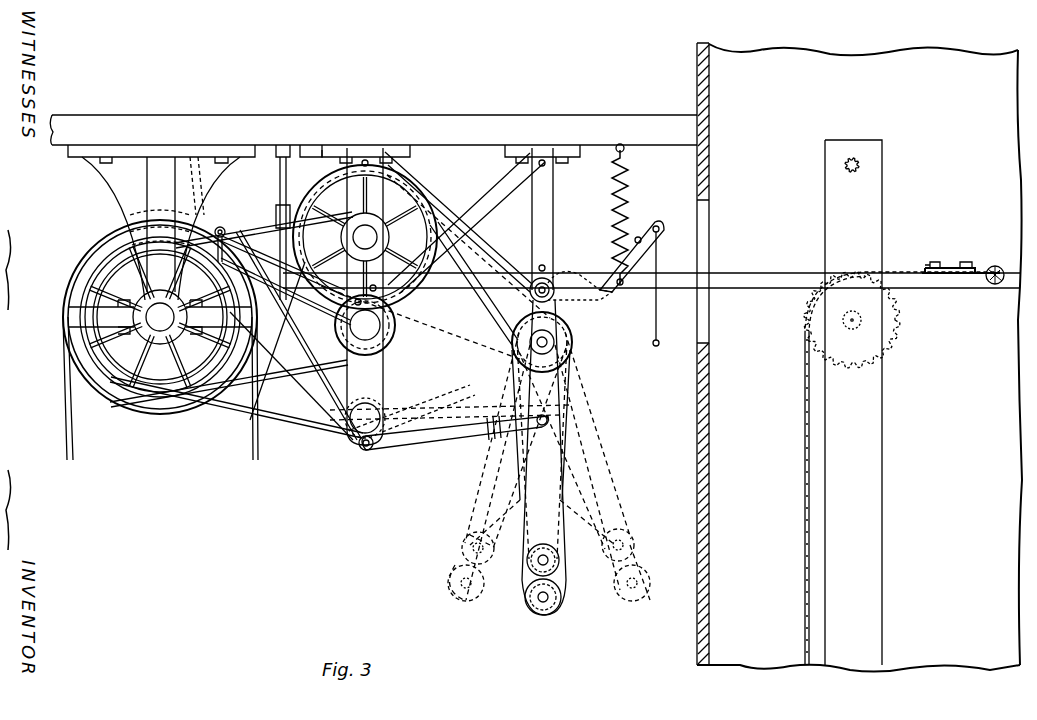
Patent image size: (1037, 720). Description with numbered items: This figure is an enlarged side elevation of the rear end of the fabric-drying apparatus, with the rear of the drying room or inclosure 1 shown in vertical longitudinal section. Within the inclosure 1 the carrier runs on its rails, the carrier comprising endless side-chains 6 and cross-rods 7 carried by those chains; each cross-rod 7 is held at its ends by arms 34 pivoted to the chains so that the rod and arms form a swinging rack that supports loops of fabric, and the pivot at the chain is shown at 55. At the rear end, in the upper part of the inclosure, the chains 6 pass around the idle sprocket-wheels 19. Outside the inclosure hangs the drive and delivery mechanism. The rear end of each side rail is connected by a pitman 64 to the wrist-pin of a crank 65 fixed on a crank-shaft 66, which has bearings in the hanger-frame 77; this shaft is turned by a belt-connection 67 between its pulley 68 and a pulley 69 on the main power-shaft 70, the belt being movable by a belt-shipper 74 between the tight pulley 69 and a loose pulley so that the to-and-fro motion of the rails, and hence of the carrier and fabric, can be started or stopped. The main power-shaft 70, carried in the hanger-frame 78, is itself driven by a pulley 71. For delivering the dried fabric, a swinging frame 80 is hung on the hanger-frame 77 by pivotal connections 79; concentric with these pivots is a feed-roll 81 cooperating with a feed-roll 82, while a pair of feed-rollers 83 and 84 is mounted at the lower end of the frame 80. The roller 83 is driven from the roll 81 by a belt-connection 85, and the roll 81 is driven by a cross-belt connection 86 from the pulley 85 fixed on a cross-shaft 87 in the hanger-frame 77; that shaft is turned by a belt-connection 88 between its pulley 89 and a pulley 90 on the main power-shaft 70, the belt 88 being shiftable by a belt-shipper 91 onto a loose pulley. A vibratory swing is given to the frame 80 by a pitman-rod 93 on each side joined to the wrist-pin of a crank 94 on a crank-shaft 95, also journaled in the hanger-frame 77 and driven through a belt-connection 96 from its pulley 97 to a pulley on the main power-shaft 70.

The drying room or inclosure 1 is at (697, 480).
The endless side-chains 6 is at (804, 486).
The cross-rods 7 is at (930, 265).
The sprocket-wheels 19 is at (895, 320).
The arms 34 is at (962, 275).
The pin 55 is at (995, 266).
The pitman 64 is at (766, 285).
The crank 65 is at (405, 305).
The crank-shaft 66 is at (350, 325).
The belt-connection 67 is at (295, 372).
The pulley 68 is at (385, 340).
The pulley 69 is at (85, 340).
The main power-shaft 70 is at (158, 318).
The pulley 71 is at (64, 430).
The belt-shipper 74 is at (200, 172).
The hanger-frame 77 is at (488, 205).
The hanger-frame 78 is at (150, 190).
The pivotal connections 79 is at (556, 342).
The swinging frame 80 is at (543, 468).
The feed-roll 81 is at (570, 328).
The feed-roll 82 is at (556, 292).
The feed-roller 83 is at (560, 590).
The feed-roller 84 is at (560, 548).
The belt-connection / pulley 85 is at (312, 185).
The cross-belt connection 86 is at (498, 318).
The cross-shaft 87 is at (360, 240).
The belt-connection 88 is at (252, 228).
The pulley 89 is at (378, 235).
The pulley 90 is at (90, 283).
The belt-shipper 91 is at (280, 182).
The pitman-rod 93 is at (445, 440).
The crank 94 is at (360, 448).
The crank-shaft 95 is at (390, 410).
The belt-connection 96 is at (320, 422).
The pulley 97 is at (350, 418).